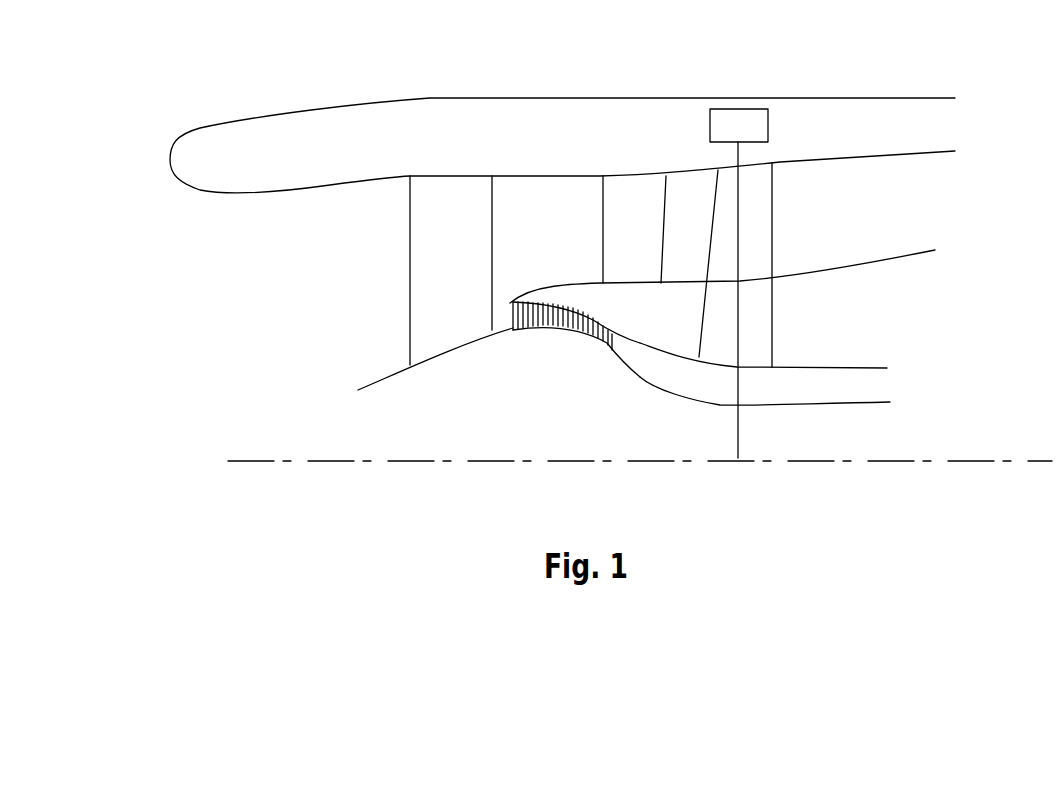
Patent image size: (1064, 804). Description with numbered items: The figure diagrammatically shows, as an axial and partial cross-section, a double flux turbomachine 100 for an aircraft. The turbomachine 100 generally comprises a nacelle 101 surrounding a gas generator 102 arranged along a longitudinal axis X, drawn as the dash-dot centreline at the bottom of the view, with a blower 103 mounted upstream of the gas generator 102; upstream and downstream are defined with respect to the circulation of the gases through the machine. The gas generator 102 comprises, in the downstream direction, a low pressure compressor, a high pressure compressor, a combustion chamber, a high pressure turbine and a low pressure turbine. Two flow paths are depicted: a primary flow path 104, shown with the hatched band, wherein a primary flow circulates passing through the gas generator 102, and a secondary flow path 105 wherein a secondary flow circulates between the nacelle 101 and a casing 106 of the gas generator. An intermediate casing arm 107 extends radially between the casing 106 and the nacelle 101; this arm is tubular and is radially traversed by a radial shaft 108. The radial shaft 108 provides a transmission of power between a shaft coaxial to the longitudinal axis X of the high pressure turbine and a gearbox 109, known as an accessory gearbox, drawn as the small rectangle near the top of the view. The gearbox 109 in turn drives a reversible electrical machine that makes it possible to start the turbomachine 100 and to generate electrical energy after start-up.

The turbomachine 100 is at (153, 125).
The nacelle 101 is at (500, 123).
The gas generator 102 is at (791, 341).
The blower 103 is at (447, 213).
The primary flow path 104 is at (513, 315).
The secondary flow path 105 is at (905, 195).
The casing 106 is at (573, 283).
The intermediate casing arm 107 is at (730, 237).
The radial shaft 108 is at (740, 200).
The gearbox 109 is at (740, 123).
The longitudinal axis X is at (970, 462).